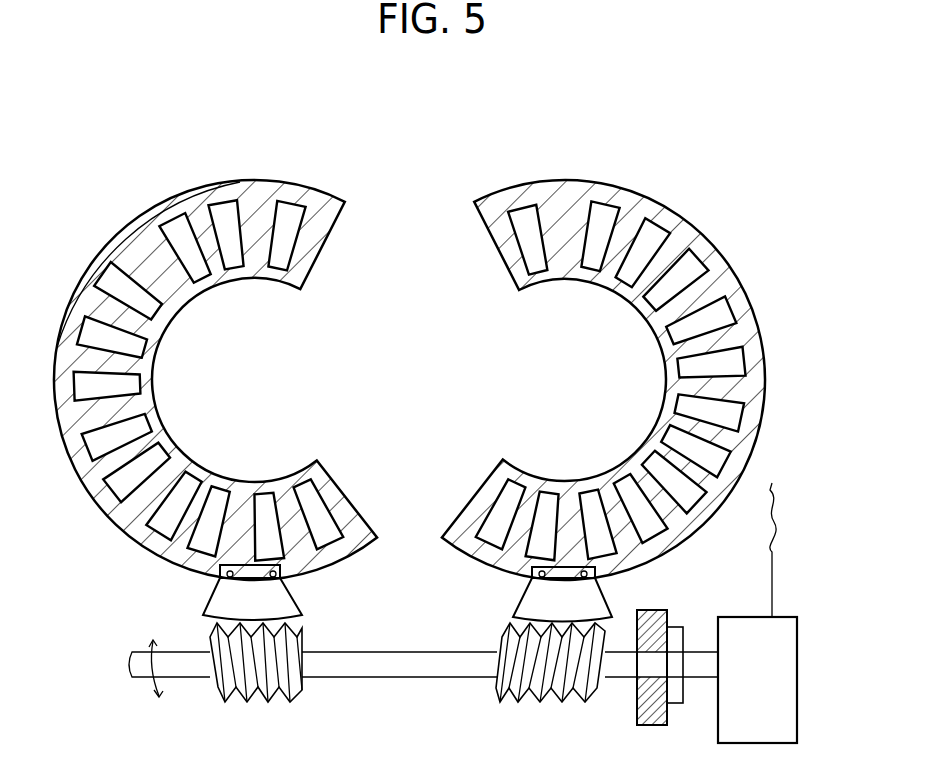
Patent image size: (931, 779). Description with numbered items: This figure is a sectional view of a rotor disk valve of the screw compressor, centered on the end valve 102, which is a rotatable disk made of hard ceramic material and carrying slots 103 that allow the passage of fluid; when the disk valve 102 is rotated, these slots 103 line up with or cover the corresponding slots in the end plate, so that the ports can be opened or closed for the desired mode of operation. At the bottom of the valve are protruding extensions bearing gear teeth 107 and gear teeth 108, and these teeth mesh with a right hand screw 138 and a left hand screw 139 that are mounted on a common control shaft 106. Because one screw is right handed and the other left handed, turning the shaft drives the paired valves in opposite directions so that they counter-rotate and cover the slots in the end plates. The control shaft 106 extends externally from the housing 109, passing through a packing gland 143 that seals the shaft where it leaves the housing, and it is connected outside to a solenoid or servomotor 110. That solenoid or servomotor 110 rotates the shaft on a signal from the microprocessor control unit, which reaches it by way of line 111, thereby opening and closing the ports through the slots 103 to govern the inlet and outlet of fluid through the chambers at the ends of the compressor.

The end valve 102 is at (498, 193).
The slots 103 is at (527, 228).
The control shaft 106 is at (419, 672).
The gear teeth 107 is at (290, 600).
The gear teeth 108 is at (513, 607).
The right hand screw 138 is at (297, 690).
The left hand screw 139 is at (592, 695).
The housing 109 is at (660, 611).
The packing gland 143 is at (678, 640).
The solenoid or servomotor 110 is at (743, 632).
The line 111 is at (778, 517).